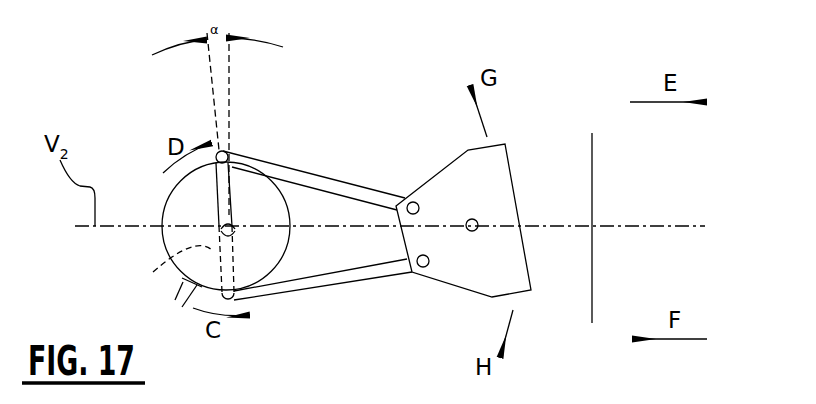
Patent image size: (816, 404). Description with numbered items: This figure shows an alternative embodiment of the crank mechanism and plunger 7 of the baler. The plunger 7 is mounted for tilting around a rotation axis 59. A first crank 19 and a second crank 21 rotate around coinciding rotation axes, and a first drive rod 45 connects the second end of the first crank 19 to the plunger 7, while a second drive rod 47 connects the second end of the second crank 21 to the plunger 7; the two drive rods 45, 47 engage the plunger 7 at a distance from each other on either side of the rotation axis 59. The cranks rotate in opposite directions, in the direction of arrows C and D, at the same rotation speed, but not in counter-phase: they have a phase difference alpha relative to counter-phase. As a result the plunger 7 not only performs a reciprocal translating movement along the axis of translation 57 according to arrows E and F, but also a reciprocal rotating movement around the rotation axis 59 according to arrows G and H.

The plunger 7 is at (478, 175).
The first crank 19 is at (172, 267).
The second crank 21 is at (216, 201).
The first drive rod 45 is at (338, 272).
The second drive rod 47 is at (325, 182).
The axis of translation 57 is at (676, 226).
The rotation axis 59 is at (474, 229).